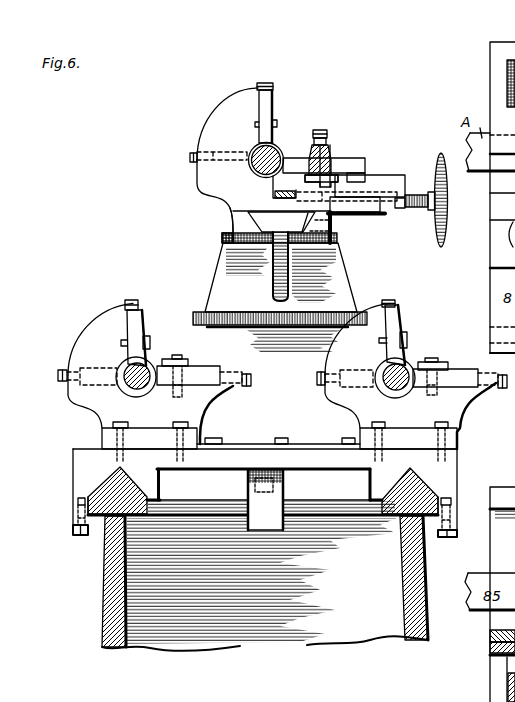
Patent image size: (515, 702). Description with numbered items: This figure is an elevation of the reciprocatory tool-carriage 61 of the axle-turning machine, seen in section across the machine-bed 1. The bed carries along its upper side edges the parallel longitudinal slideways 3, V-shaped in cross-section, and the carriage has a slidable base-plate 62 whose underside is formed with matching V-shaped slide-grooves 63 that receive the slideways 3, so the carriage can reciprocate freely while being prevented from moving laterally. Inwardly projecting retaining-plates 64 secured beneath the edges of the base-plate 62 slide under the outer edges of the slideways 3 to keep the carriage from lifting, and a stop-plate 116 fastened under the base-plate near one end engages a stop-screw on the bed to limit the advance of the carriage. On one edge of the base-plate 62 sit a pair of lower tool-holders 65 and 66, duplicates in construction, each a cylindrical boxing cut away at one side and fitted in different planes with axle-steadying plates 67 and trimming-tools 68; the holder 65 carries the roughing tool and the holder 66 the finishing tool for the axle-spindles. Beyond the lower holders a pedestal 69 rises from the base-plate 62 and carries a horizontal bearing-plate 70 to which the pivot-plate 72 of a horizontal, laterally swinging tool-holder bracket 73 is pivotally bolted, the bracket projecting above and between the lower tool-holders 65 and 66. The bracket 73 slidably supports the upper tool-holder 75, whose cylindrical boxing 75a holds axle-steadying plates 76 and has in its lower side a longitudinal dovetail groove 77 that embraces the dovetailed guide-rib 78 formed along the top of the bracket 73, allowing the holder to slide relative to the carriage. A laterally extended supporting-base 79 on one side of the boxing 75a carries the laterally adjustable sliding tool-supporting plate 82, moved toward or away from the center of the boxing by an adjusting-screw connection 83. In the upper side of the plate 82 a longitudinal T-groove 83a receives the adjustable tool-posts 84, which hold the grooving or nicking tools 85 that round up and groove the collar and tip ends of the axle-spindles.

The machine-bed 1 is at (265, 583).
The longitudinal slideways 3 is at (98, 487).
The reciprocatory tool-carriage 61 is at (230, 458).
The slidable base-plate 62 is at (271, 483).
The V-shaped slide-grooves 63 is at (136, 489).
The retaining-plates 64 is at (78, 516).
The lower tool-holder 65 is at (97, 397).
The lower tool-holder 66 is at (458, 405).
The axle-steadying plates 67 is at (135, 330).
The trimming-tools 68 is at (151, 373).
The pedestal 69 is at (278, 387).
The horizontal bearing-plate 70 is at (240, 315).
The pivot-plate 72 is at (251, 312).
The tool-holder bracket 73 is at (255, 237).
The upper tool-holder 75 is at (223, 106).
The cylindrical boxing 75a is at (372, 139).
The axle-steadying plates 76 is at (269, 112).
The longitudinal dovetail groove 77 is at (233, 217).
The dovetailed guide-rib 78 is at (281, 221).
The supporting-base 79 is at (373, 209).
The sliding tool-supporting plate 82 is at (386, 185).
The adjusting-screw connection 83 is at (418, 208).
The longitudinal T-groove 83a is at (331, 180).
The tool-posts 84 is at (318, 180).
The grooving or nicking tools 85 is at (290, 163).
The stop-plate 116 is at (252, 508).